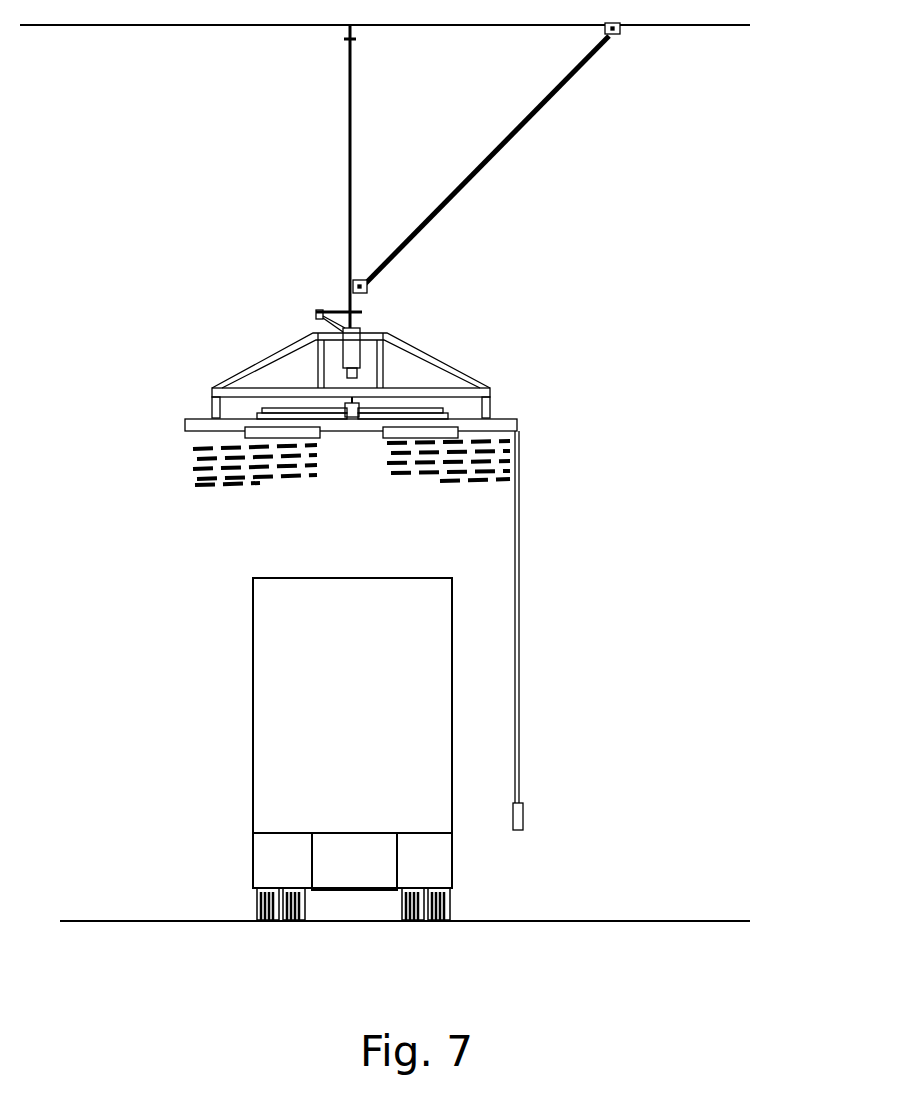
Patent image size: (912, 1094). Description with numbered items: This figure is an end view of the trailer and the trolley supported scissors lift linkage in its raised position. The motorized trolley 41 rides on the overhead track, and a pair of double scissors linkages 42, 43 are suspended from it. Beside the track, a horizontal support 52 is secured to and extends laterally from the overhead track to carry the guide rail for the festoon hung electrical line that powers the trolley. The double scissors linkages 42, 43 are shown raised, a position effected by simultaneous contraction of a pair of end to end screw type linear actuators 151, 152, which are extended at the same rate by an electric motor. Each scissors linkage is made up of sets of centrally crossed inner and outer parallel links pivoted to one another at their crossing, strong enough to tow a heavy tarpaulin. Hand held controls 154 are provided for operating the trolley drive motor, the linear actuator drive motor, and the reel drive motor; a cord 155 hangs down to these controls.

The motorized trolley 41 is at (413, 350).
The double scissors linkage 42 is at (195, 462).
The double scissors linkage 43 is at (390, 470).
The horizontal support 52 is at (322, 311).
The screw type linear actuator 151 is at (285, 408).
The screw type linear actuator 152 is at (432, 408).
The hand held controls 154 is at (524, 806).
The rod 155 is at (520, 580).